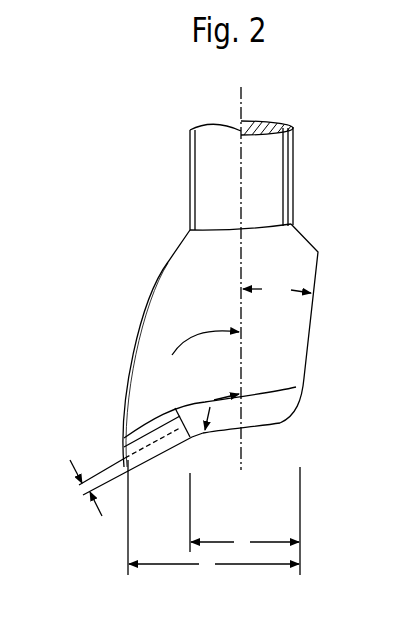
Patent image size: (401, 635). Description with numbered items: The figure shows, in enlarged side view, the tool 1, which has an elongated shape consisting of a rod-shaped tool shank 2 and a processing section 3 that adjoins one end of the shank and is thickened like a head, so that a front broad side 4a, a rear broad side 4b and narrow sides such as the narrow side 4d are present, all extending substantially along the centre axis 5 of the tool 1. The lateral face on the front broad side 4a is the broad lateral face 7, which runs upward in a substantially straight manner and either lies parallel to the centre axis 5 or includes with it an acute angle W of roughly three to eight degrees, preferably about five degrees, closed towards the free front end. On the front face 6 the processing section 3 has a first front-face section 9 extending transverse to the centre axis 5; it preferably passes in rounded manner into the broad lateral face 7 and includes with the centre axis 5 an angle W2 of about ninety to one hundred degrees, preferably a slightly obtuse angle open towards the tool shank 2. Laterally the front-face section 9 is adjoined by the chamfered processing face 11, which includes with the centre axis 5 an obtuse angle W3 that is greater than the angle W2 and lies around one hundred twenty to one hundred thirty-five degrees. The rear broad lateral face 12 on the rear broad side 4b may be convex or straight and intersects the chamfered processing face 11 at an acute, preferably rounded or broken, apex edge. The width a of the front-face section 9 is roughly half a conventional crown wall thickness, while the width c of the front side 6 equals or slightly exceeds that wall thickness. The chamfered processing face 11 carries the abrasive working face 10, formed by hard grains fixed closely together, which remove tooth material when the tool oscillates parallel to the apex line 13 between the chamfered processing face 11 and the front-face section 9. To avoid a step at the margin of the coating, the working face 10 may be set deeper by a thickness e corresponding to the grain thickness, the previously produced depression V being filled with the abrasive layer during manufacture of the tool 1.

The tool 1 is at (148, 229).
The tool shank 2 is at (207, 161).
The processing section 3 is at (222, 400).
The front broad side 4a is at (313, 325).
The rear broad side 4b is at (118, 348).
The narrow side 4d is at (250, 342).
The centre axis 5 is at (238, 89).
The front face 6 is at (248, 435).
The broad lateral face 7 is at (339, 323).
The front-face section 9 is at (264, 430).
The working face 10 is at (132, 473).
The chamfered processing face 11 is at (144, 447).
The rear broad lateral face 12 is at (145, 310).
The apex line 13 is at (190, 440).
The depression V is at (79, 488).
The thickness e is at (79, 488).
The acute angle W is at (277, 289).
The angle W2 is at (213, 405).
The obtuse angle W3 is at (192, 357).
The width of the front-face section a is at (245, 521).
The width of the front side c is at (213, 518).